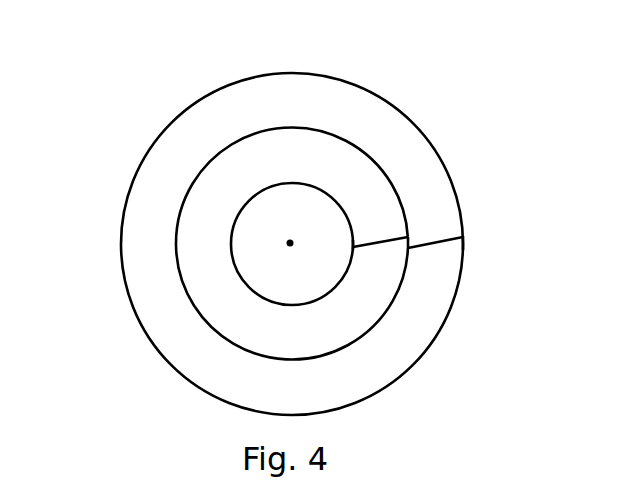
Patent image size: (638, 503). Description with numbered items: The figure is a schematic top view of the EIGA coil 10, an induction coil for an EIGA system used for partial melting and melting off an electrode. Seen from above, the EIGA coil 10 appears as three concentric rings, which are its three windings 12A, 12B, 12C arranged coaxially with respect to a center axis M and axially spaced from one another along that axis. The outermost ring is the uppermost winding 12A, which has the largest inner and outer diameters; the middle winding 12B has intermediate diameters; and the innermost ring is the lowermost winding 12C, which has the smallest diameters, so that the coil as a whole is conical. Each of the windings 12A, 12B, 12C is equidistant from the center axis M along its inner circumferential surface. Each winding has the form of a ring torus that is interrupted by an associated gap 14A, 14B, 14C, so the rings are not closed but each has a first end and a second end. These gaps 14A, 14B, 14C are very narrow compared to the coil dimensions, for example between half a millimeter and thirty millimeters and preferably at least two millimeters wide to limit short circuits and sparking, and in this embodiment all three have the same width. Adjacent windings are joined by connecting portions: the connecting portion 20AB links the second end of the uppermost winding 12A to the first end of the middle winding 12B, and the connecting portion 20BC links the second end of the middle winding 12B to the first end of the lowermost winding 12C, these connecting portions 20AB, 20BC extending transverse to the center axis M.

The EIGA coil 10 is at (102, 83).
The uppermost winding 12A is at (372, 88).
The middle winding 12B is at (377, 162).
The lowermost winding 12C is at (233, 245).
The gap 14A is at (463, 242).
The gap 14B is at (409, 240).
The gap 14C is at (354, 248).
The connecting portion 20AB is at (433, 245).
The connecting portion 20BC is at (383, 233).